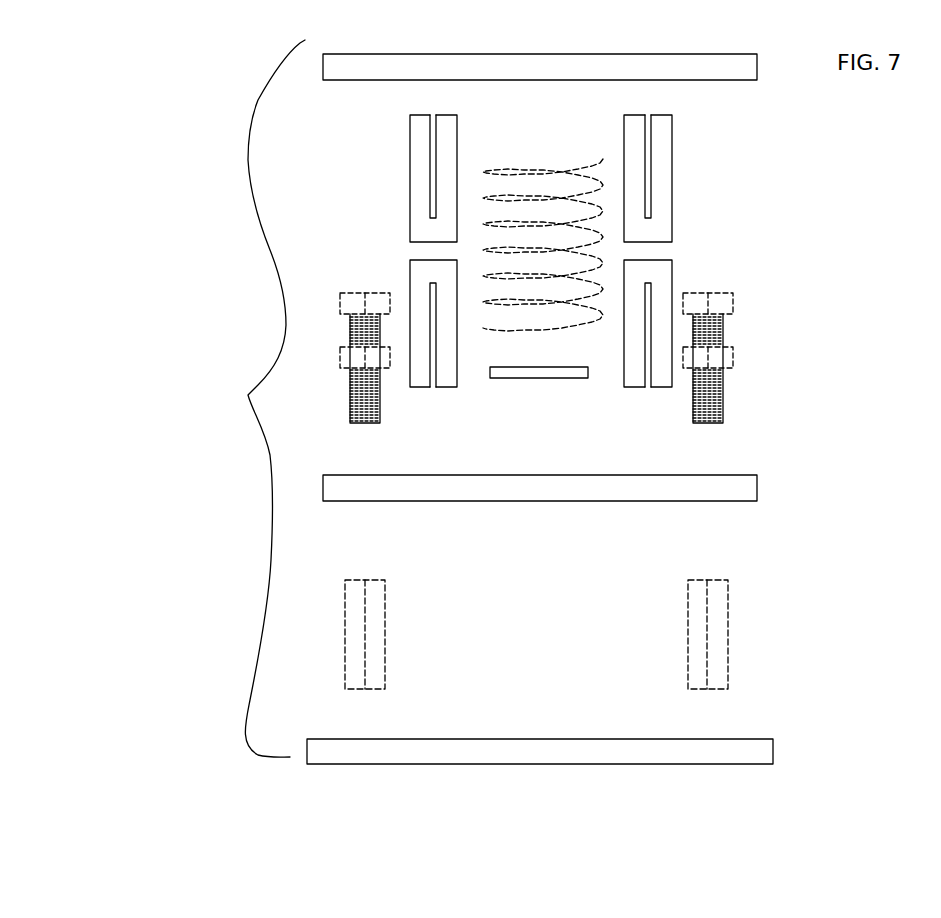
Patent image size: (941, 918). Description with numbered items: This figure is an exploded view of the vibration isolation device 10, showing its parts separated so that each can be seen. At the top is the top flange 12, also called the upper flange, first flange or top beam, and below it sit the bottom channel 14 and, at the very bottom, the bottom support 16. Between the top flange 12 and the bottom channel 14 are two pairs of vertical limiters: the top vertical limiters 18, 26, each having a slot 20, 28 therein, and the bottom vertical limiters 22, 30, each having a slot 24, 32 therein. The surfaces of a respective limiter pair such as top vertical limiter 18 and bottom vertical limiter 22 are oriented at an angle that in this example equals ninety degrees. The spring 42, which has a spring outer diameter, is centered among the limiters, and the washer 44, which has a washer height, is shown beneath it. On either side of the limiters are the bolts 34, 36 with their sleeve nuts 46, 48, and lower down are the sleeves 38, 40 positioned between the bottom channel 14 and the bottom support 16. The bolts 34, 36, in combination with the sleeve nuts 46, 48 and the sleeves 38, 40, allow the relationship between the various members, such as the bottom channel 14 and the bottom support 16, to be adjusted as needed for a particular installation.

The vibration isolation device 10 is at (234, 398).
The top flange 12 is at (728, 72).
The bottom channel 14 is at (740, 490).
The bottom support 16 is at (762, 750).
The top vertical limiter 18 is at (663, 203).
The slot 20 is at (648, 162).
The bottom vertical limiter 22 is at (663, 288).
The slot 24 is at (650, 365).
The top vertical limiter 26 is at (418, 165).
The slot 28 is at (433, 133).
The bottom vertical limiter 30 is at (415, 283).
The slot 32 is at (413, 363).
The bolt 34 is at (347, 300).
The bolt 36 is at (723, 305).
The sleeve 38 is at (357, 638).
The sleeve 40 is at (718, 630).
The spring 42 is at (560, 180).
The washer 44 is at (510, 370).
The sleeve nut 46 is at (725, 357).
The sleeve nut 48 is at (347, 352).